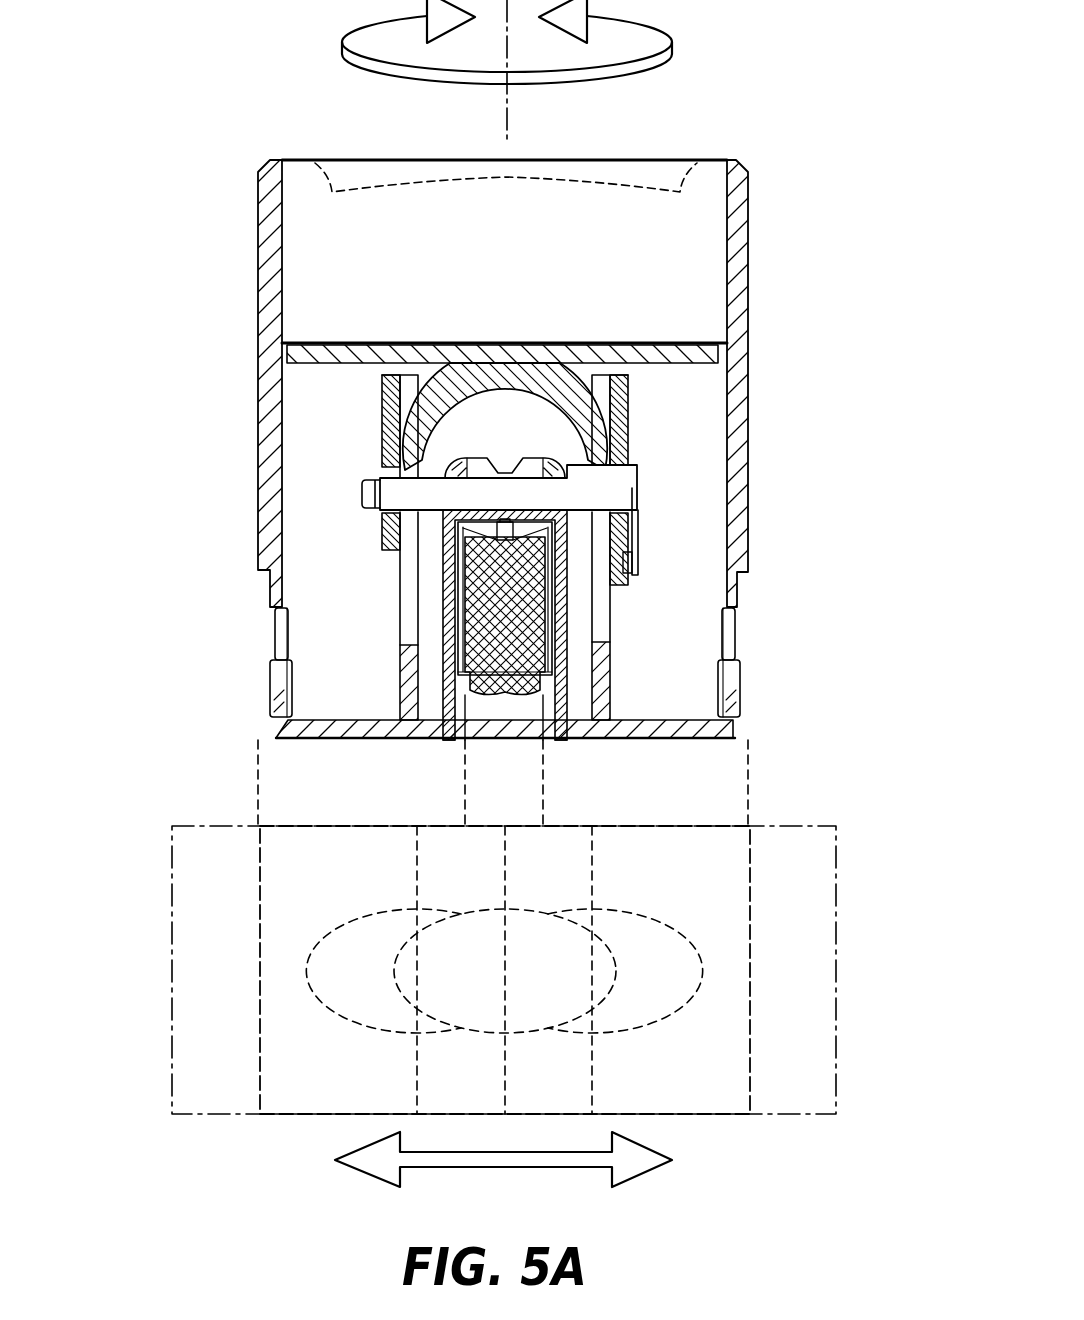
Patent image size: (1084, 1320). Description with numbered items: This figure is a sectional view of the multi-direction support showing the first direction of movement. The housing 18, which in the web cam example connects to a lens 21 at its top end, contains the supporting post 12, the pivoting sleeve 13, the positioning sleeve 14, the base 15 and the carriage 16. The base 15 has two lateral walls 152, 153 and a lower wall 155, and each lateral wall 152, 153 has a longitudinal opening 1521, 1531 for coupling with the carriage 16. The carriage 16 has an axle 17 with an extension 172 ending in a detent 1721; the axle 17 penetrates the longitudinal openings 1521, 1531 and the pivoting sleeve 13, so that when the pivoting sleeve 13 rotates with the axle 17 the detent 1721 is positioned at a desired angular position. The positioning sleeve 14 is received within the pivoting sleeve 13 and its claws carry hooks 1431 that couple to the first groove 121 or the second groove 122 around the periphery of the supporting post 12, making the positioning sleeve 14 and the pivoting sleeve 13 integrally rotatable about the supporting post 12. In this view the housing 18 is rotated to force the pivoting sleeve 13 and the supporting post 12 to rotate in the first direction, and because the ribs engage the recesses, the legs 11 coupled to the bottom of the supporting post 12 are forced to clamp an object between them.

The leg 11 is at (722, 782).
The supporting post 12 is at (511, 665).
The first groove 121 is at (548, 673).
The second groove 122 is at (563, 572).
The pivoting sleeve 13 is at (407, 630).
The positioning sleeve 14 is at (447, 530).
The hook 1431 is at (443, 738).
The base 15 is at (583, 343).
The lateral wall 152 is at (610, 672).
The longitudinal opening 1521 is at (598, 613).
The lateral wall 153 is at (407, 668).
The longitudinal opening 1531 is at (407, 607).
The lower wall 155 is at (302, 742).
The carriage 16 is at (382, 420).
The axle 17 is at (639, 481).
The extension 172 is at (637, 512).
The detent 1721 is at (625, 563).
The housing 18 is at (727, 347).
The lens 21 is at (390, 208).